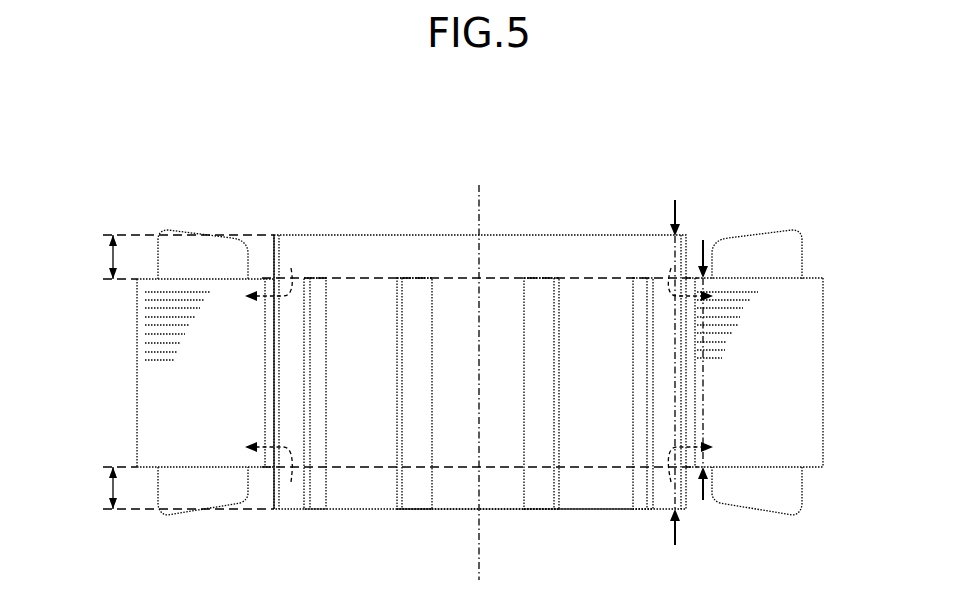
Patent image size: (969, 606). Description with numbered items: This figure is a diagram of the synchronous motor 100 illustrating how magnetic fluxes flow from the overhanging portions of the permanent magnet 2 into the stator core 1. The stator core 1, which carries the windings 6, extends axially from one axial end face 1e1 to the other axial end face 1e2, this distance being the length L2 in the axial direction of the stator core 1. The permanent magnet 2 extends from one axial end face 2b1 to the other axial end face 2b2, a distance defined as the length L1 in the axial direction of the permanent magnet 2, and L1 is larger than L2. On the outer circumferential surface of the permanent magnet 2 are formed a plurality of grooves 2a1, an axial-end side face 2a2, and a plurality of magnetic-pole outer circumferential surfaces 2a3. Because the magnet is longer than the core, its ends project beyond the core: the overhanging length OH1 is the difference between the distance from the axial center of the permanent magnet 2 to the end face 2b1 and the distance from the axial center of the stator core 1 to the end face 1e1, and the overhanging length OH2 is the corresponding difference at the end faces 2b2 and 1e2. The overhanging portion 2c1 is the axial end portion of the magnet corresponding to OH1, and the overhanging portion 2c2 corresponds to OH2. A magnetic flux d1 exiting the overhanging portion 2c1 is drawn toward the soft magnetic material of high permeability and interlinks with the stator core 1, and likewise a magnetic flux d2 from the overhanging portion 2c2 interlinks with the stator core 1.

The synchronous motor 100 is at (580, 113).
The stator core 1 is at (797, 372).
The axial end face of the stator core 1e1 is at (150, 279).
The axial end face of the stator core 1e2 is at (148, 474).
The permanent magnet 2 is at (648, 196).
The grooves 2a1 is at (415, 478).
The axial-end side face 2a2 is at (410, 250).
The magnetic-pole outer circumferential surfaces 2a3 is at (507, 490).
The axial end face of the permanent magnet 2b1 is at (588, 237).
The axial end face of the permanent magnet 2b2 is at (587, 510).
The overhanging portion 2c1 is at (458, 248).
The overhanging portion 2c2 is at (459, 492).
The windings 6 is at (777, 244).
The overhanging length OH1 is at (112, 257).
The overhanging length OH2 is at (112, 490).
The magnetic flux d1 is at (265, 270).
The magnetic flux d2 is at (265, 474).
The length in the axial direction of the permanent magnet L1 is at (675, 386).
The length in the axial direction of the stator core L2 is at (704, 388).